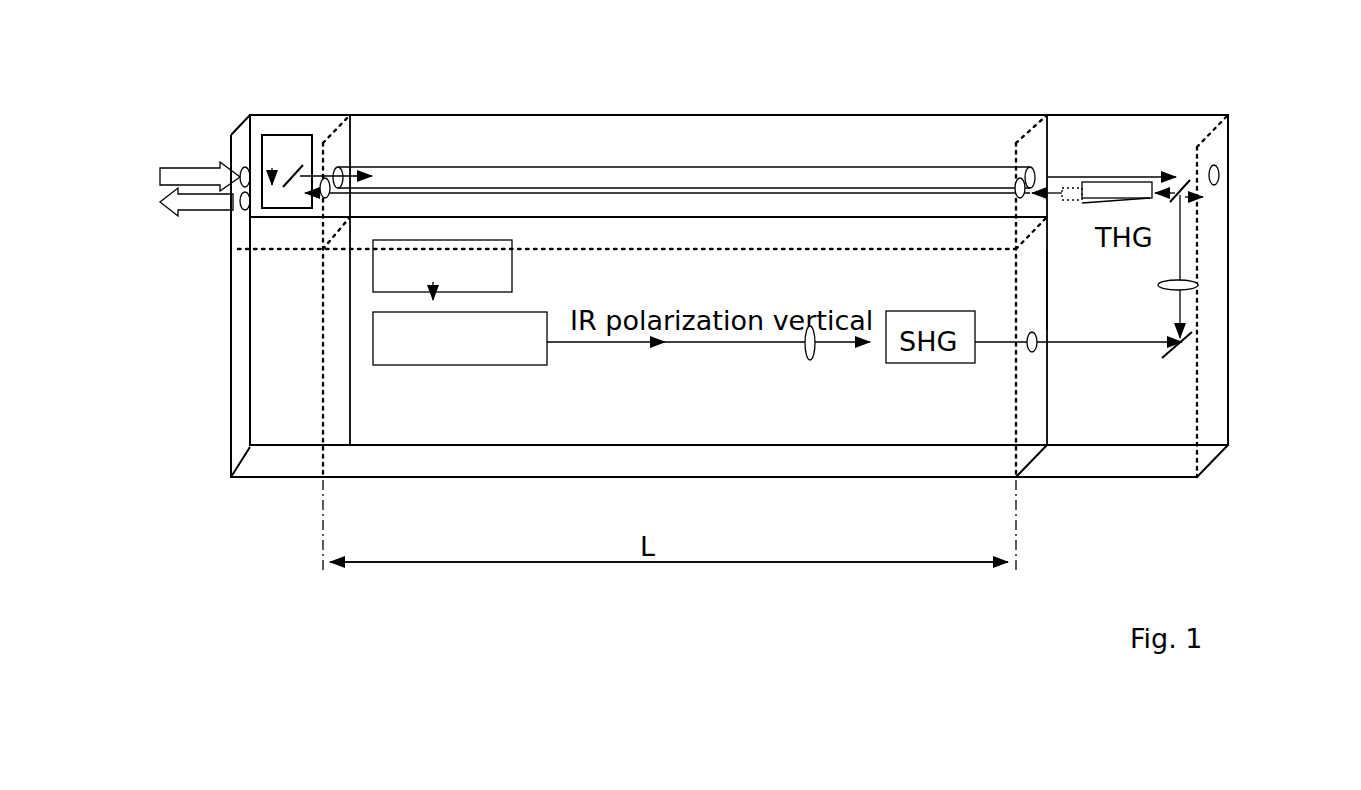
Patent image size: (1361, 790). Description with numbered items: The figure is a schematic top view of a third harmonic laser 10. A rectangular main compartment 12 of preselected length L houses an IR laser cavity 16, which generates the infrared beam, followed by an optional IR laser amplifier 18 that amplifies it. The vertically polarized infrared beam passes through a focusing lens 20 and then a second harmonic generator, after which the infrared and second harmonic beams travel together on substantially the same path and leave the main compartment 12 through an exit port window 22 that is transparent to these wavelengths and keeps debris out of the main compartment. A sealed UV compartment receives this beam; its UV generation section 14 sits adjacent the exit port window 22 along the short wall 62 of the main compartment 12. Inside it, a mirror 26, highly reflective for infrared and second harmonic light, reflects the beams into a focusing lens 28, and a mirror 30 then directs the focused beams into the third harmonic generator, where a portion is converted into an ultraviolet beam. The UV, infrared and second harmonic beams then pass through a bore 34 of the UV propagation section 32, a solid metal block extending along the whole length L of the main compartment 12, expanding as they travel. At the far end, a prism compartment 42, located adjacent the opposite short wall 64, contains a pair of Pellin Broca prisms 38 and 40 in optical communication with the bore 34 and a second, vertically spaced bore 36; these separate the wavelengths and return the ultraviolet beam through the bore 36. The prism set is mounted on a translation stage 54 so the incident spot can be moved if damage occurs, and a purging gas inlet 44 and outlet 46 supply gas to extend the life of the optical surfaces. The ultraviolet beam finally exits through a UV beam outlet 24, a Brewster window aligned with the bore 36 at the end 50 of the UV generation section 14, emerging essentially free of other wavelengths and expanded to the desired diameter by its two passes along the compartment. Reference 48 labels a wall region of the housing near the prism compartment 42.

The third harmonic laser 10 is at (593, 413).
The main compartment 12 is at (729, 296).
The UV generation section 14 is at (1100, 140).
The IR laser cavity 16 is at (500, 264).
The IR laser amplifier 18 is at (443, 370).
The focusing lens 20 is at (814, 375).
The exit port window 22 is at (1026, 360).
The UV beam outlet 24 is at (1220, 150).
The mirror 26 is at (1188, 360).
The focusing lens 28 is at (1205, 287).
The mirror 30 is at (1196, 197).
The UV propagation section 32 is at (782, 157).
The bore 34 is at (1002, 180).
The bore 36 is at (884, 180).
The Pellin Broca prism 38 is at (287, 205).
The Pellin Broca prism 40 is at (296, 168).
The prism compartment 42 is at (340, 144).
The purging gas inlet 44 is at (190, 165).
The purging gas outlet 46 is at (178, 222).
The front wall 48 is at (240, 228).
The end of UV generation section 50 is at (1235, 345).
The translation stage 54 is at (307, 63).
The short wall 62 is at (1032, 282).
The short wall 64 is at (344, 375).